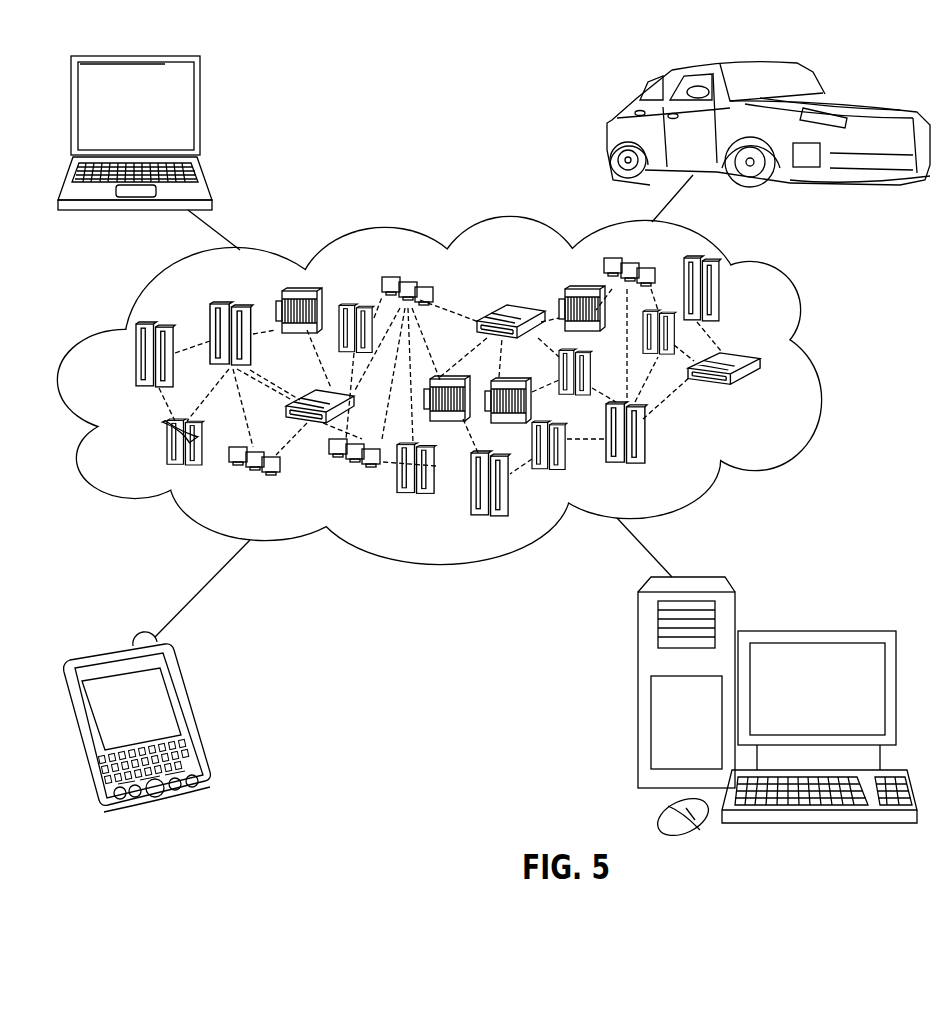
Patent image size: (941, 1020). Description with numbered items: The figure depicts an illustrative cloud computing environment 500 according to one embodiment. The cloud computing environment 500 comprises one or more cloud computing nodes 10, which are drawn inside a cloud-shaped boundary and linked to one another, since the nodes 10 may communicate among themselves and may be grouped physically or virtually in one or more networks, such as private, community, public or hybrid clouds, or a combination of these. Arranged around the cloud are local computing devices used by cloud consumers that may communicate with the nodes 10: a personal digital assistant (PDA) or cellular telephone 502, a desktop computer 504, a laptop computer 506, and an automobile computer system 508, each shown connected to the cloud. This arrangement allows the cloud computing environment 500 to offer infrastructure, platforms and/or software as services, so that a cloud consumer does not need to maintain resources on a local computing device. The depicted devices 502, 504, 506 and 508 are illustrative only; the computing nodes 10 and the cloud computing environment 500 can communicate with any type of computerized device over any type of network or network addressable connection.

The cloud computing environment 500 is at (813, 363).
The cloud computing nodes 10 is at (776, 400).
The personal digital assistant (PDA) or cellular telephone 502 is at (190, 717).
The desktop computer 504 is at (815, 631).
The laptop computer 506 is at (201, 113).
The automobile computer system 508 is at (609, 128).